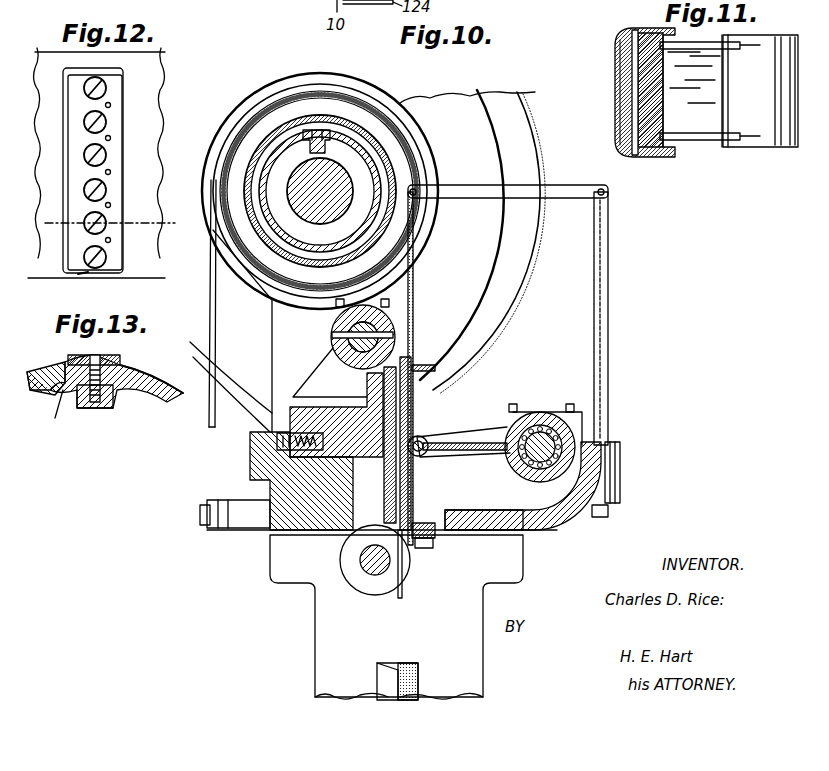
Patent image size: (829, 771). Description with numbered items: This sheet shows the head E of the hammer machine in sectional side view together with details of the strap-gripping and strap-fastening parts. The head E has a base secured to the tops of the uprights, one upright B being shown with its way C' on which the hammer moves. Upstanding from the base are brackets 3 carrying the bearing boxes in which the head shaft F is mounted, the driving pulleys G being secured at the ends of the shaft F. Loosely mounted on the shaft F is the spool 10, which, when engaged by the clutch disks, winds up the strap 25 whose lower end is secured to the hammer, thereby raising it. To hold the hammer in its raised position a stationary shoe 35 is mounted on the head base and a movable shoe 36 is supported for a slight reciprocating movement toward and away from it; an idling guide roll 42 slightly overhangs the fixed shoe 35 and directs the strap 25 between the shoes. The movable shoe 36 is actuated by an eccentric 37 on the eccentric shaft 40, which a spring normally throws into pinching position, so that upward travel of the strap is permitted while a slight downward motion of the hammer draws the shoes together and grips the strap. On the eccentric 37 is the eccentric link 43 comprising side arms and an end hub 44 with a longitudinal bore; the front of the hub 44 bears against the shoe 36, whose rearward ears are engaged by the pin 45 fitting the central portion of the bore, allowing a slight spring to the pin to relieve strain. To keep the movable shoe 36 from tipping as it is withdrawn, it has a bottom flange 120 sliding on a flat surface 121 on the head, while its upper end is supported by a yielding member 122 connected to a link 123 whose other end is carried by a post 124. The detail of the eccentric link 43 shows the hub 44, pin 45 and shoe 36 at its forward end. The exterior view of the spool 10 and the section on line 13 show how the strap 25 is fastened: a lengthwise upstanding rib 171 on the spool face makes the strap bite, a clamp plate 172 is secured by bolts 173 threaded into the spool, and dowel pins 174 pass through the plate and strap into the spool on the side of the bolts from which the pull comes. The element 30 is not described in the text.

In FIG. 12, the spool 10 is at (157, 64).
In FIG. 10, the spool 10 is at (428, 212).
In FIG. 12, the clamp plate 172 is at (120, 91).
In FIG. 13, the clamp plate 172 is at (118, 361).
In FIG. 10, the clamp plate 172 is at (328, 130).
In FIG. 12, the bolts 173 is at (100, 157).
In FIG. 13, the bolts 173 is at (95, 404).
In FIG. 12, the dowel pins 174 is at (111, 172).
In FIG. 13, the dowel pins 174 is at (113, 395).
In FIG. 12, the section line 13 is at (111, 223).
In FIG. 12, the rib 171 is at (80, 275).
In FIG. 13, the rib 171 is at (59, 413).
In FIG. 13, the strap 25 is at (175, 403).
In FIG. 10, the strap 25 is at (400, 268).
In FIG. 11, the movable shoe 36 is at (622, 75).
In FIG. 10, the movable shoe 36 is at (413, 423).
In FIG. 11, the end hub 44 is at (624, 120).
In FIG. 10, the end hub 44 is at (443, 463).
In FIG. 11, the pin 45 is at (636, 30).
In FIG. 10, the pin 45 is at (423, 463).
In FIG. 11, the eccentric link 43 is at (705, 142).
In FIG. 10, the eccentric link 43 is at (493, 420).
In FIG. 10, the driving pulleys G is at (528, 258).
In FIG. 10, the brackets 3 is at (272, 333).
In FIG. 10, the rod 30 is at (216, 312).
In FIG. 10, the head shaft F is at (355, 172).
In FIG. 10, the link 123 is at (470, 185).
In FIG. 10, the post 124 is at (603, 232).
In FIG. 10, the yielding member 122 is at (410, 247).
In FIG. 10, the idling guide roll 42 is at (333, 348).
In FIG. 10, the stationary shoe 35 is at (383, 386).
In FIG. 10, the eccentric 37 is at (560, 438).
In FIG. 10, the eccentric shaft 40 is at (620, 480).
In FIG. 10, the head E is at (563, 517).
In FIG. 10, the bottom flange 120 is at (484, 511).
In FIG. 10, the flat surface 121 is at (437, 538).
In FIG. 10, the upright B is at (515, 563).
In FIG. 10, the way C' is at (412, 680).